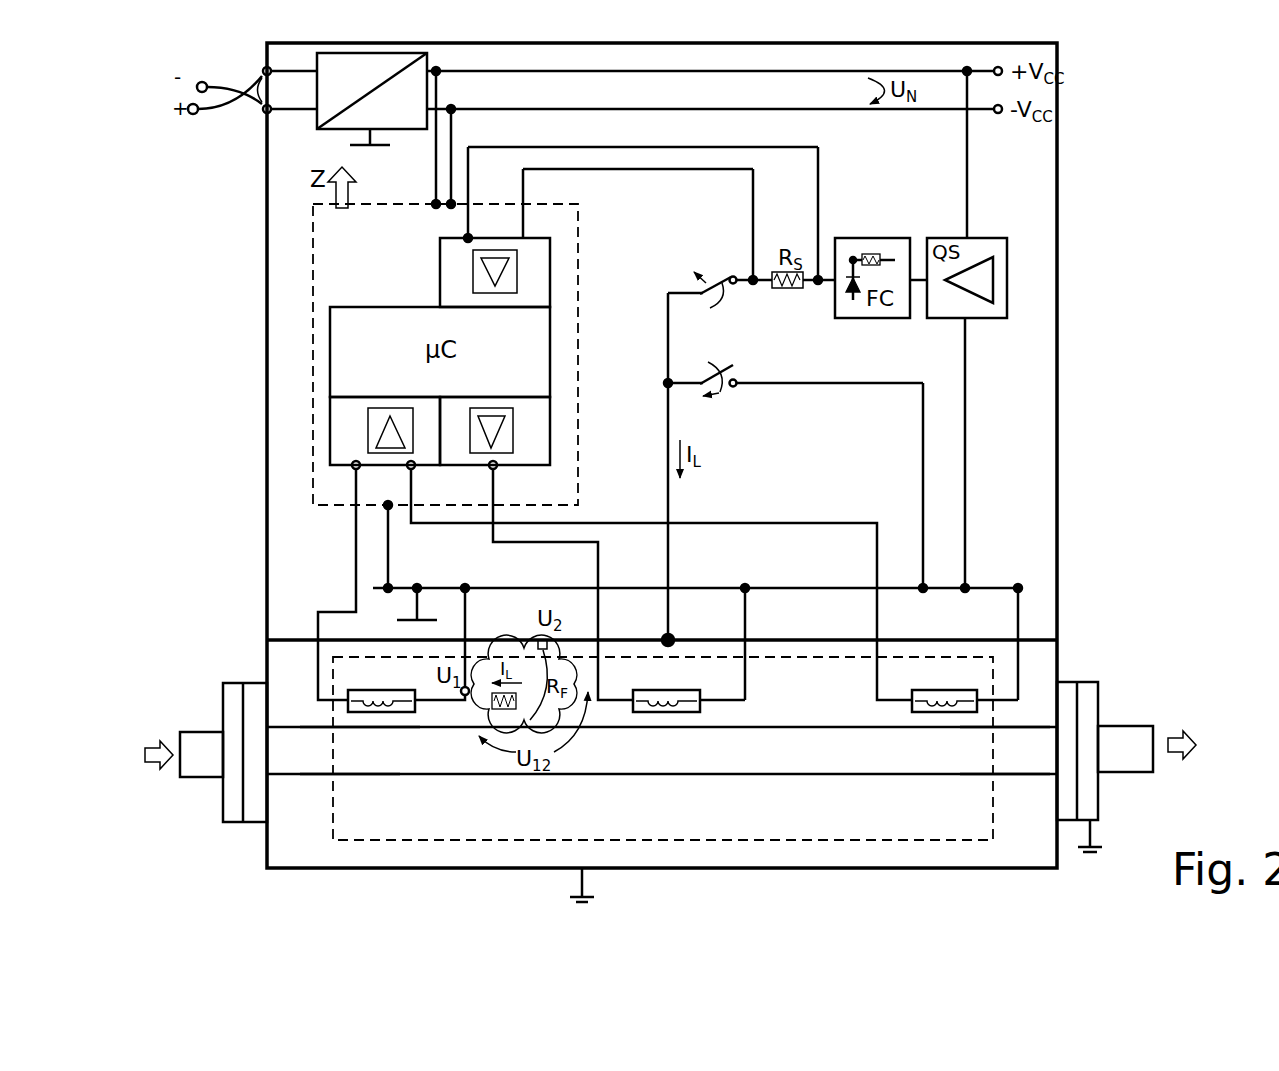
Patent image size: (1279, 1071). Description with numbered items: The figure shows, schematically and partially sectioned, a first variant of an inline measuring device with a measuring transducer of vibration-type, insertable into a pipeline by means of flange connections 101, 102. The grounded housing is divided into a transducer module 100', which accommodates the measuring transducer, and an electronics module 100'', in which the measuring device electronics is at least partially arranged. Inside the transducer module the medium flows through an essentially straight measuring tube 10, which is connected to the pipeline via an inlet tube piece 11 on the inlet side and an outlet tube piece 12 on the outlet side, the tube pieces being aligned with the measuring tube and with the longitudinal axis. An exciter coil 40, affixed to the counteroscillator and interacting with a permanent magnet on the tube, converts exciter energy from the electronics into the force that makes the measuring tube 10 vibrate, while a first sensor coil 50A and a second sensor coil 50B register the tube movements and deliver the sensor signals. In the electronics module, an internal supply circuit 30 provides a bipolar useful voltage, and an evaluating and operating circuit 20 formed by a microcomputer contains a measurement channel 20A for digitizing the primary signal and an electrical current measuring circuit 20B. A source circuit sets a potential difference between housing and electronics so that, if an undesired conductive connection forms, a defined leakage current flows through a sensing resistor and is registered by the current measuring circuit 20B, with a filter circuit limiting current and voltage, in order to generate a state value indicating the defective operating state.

The measuring tube 10 is at (415, 768).
The inlet tube piece 11 is at (320, 770).
The outlet tube piece 12 is at (1042, 768).
The evaluating and operating circuit 20 is at (316, 255).
The measurement channel 20A is at (343, 427).
The electrical current measuring circuit 20B is at (535, 285).
The internal supply circuit 30 is at (317, 124).
The exciter coil 40 is at (710, 704).
The first sensor coil 50A is at (421, 710).
The second sensor coil 50B is at (866, 693).
The transducer module 100' is at (614, 748).
The electronics module 100'' is at (627, 455).
The flange connection 101 is at (243, 672).
The flange connection 102 is at (1078, 670).